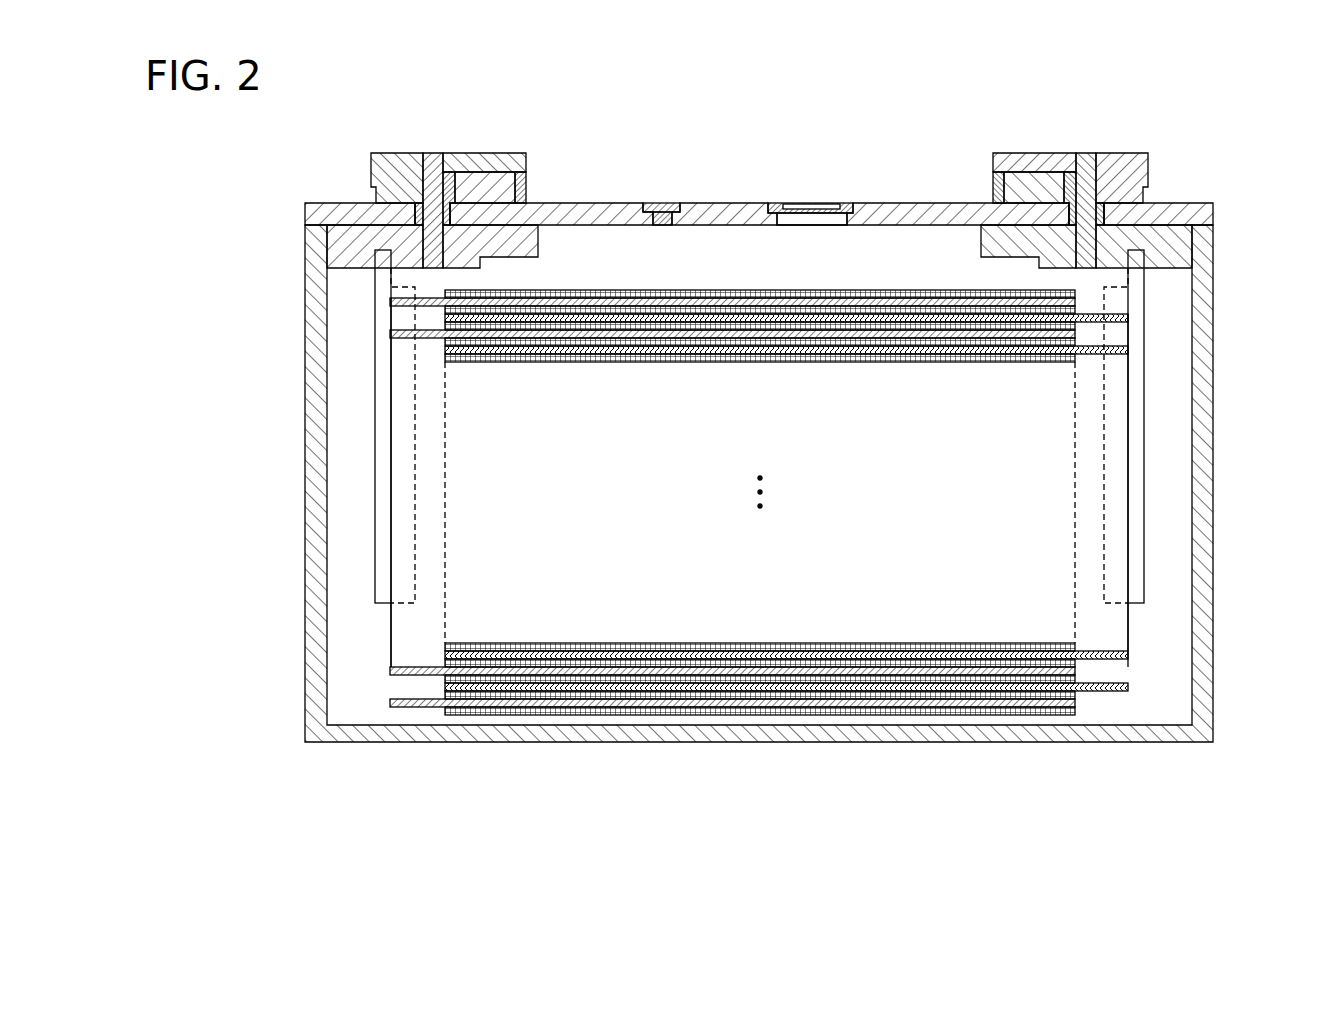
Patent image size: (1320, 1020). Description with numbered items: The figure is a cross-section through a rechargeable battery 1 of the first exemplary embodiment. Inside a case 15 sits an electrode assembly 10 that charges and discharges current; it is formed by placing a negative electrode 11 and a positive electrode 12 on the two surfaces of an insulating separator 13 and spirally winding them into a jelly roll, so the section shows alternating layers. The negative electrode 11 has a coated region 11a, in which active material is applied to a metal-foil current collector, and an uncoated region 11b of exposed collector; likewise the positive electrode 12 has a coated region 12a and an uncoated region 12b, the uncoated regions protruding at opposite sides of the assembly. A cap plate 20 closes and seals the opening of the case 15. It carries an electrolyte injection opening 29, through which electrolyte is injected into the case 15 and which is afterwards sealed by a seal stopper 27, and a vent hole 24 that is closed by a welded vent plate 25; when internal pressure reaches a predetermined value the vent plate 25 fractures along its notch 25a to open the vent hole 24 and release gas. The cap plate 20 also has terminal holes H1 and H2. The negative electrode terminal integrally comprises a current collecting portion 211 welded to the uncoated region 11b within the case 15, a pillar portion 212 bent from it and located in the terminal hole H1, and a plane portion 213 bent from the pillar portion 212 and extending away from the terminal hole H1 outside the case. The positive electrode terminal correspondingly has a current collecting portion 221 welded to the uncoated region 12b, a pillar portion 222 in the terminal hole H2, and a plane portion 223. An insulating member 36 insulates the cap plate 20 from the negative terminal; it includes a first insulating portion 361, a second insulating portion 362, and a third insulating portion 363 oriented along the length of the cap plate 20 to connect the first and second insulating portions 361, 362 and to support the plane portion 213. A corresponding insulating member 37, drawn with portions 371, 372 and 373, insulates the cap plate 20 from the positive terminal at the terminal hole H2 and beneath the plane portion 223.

The rechargeable battery 1 is at (751, 85).
The electrode assembly 10 is at (762, 559).
The negative electrode 11 is at (732, 563).
The coated region 11a is at (550, 703).
The uncoated region 11b is at (416, 544).
The positive electrode 12 is at (790, 571).
The coated region 12a is at (1000, 697).
The uncoated region 12b is at (1110, 552).
The separator 13 is at (776, 712).
The case 15 is at (1205, 475).
The cap plate 20 is at (735, 215).
The vent hole 24 is at (800, 220).
The vent plate 25 is at (845, 207).
The notch 25a is at (800, 207).
The seal stopper 27 is at (672, 210).
The electrolyte injection opening 29 is at (648, 205).
The insulating member 36 is at (443, 179).
The first insulating portion 361 is at (392, 168).
The second insulating portion 362 is at (523, 195).
The third insulating portion 363 is at (497, 186).
The insulating member 37 is at (1076, 179).
The second terminal plate 371 is at (1128, 167).
The second insulating member 372 is at (1003, 195).
The second connecting member 373 is at (1022, 183).
The current collecting portion 211 is at (376, 380).
The pillar portion 212 is at (416, 200).
The plane portion 213 is at (444, 202).
The current collecting portion 221 is at (1145, 380).
The pillar portion 222 is at (1096, 170).
The plane portion 223 is at (1056, 170).
The terminal hole H1 is at (456, 160).
The terminal hole H2 is at (1072, 200).